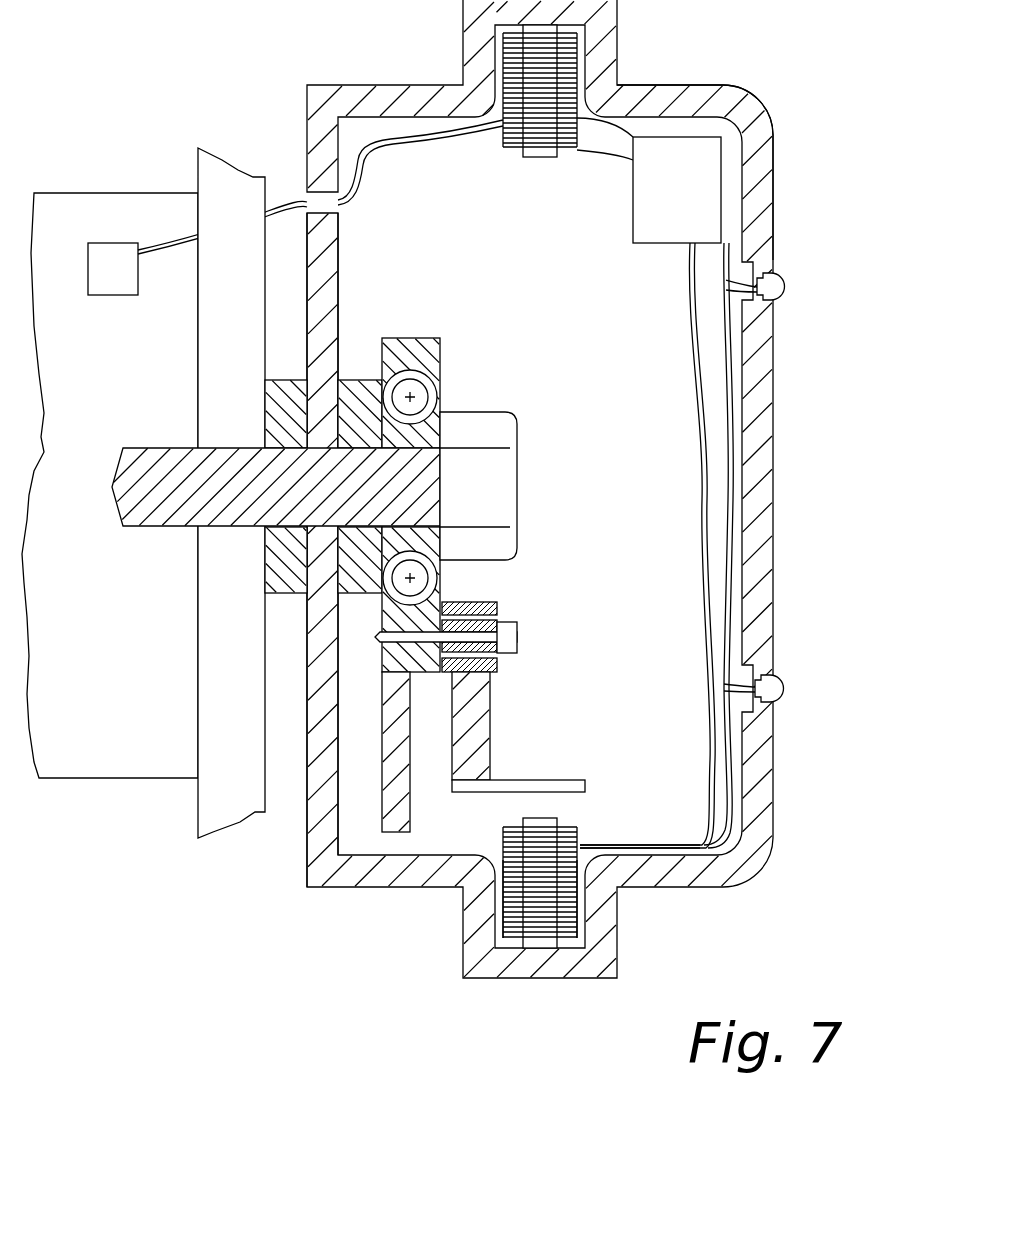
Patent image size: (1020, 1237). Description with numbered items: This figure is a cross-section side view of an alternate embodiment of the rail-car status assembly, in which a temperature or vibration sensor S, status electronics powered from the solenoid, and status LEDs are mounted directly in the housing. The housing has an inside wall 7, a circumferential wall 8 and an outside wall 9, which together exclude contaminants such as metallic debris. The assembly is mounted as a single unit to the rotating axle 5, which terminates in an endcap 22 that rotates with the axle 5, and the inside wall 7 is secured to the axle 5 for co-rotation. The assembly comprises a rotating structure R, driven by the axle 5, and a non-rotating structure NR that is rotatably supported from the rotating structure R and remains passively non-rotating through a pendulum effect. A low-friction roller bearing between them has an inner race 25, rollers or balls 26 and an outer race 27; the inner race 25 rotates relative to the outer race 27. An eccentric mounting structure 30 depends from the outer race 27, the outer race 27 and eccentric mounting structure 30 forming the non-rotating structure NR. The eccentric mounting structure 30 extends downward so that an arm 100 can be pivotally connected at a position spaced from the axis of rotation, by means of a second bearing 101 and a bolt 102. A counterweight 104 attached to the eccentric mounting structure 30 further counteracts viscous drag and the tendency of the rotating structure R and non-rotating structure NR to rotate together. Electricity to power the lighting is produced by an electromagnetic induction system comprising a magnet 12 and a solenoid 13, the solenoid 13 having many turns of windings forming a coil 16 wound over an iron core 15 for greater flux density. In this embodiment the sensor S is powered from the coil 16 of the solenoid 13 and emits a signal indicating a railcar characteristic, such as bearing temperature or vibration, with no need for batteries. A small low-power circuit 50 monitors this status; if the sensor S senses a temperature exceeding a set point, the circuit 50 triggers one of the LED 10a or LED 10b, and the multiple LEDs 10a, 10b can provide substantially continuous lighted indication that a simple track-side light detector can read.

The rotating structure R is at (385, 85).
The circumferential wall 8 is at (680, 85).
The inside wall 7 is at (345, 265).
The axle 5 is at (67, 193).
The sensor S is at (197, 248).
The endcap 22 is at (222, 173).
The non-rotating structure NR is at (453, 527).
The rollers or balls 26 is at (417, 383).
The outer race 27 is at (440, 597).
The inner race 25 is at (442, 412).
The eccentric mounting structure 30 is at (382, 672).
The second bearing 101 is at (517, 617).
The bolt 102 is at (517, 638).
The arm 100 is at (488, 725).
The counterweight 104 is at (390, 833).
The magnet 12 is at (520, 780).
The iron core 15 is at (553, 818).
The coil 16 is at (503, 837).
The solenoid 13 is at (600, 840).
The outside wall 9 is at (740, 407).
The low power circuit 50 is at (690, 188).
The LED 10a is at (770, 672).
The LED 10b is at (773, 270).